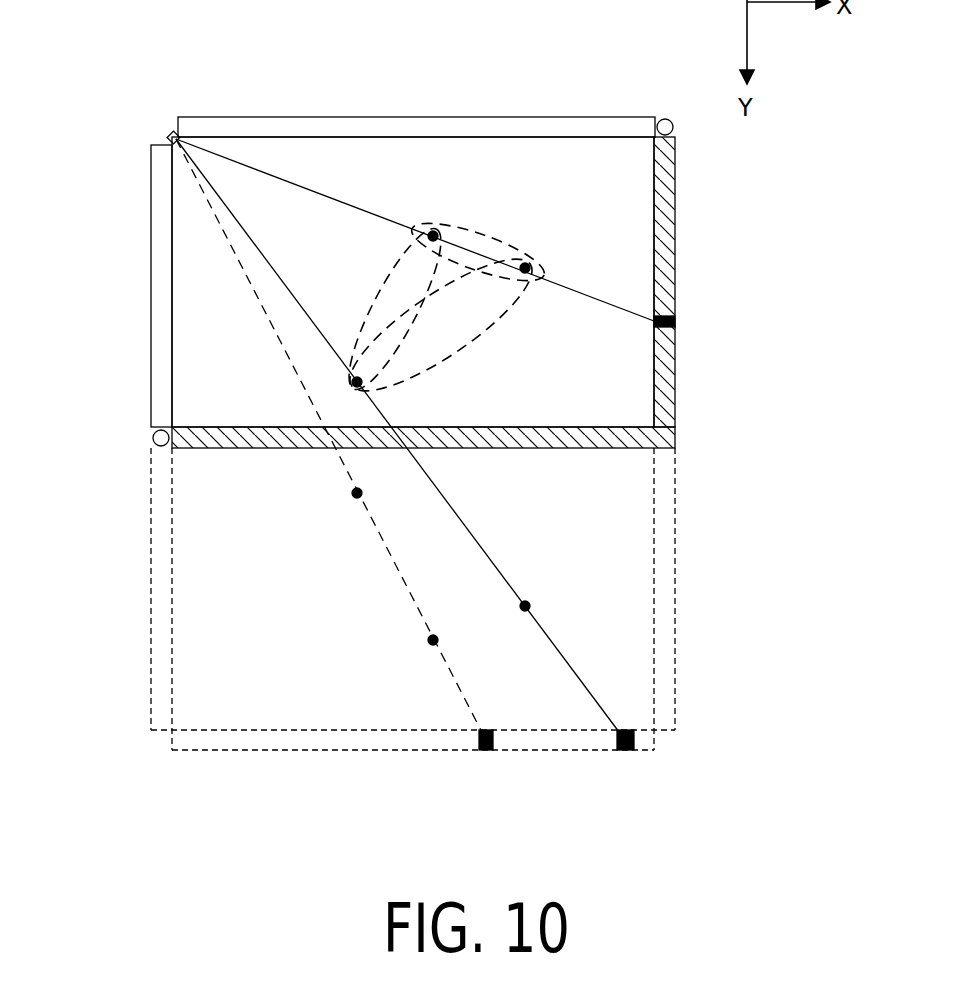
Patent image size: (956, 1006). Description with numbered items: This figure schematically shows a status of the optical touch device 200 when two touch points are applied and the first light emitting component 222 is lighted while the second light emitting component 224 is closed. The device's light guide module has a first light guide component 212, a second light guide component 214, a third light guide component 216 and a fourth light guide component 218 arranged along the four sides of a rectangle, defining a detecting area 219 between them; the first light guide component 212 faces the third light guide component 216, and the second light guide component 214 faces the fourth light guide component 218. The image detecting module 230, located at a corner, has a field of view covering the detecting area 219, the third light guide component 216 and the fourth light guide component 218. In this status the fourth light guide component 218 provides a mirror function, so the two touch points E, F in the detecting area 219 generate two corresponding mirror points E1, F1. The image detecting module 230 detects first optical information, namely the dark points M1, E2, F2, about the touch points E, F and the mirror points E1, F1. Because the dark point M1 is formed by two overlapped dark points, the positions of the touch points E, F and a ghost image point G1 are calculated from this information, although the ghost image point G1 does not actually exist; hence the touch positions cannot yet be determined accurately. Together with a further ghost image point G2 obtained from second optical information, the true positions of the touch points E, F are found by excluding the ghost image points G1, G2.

The optical touch device 200 is at (760, 788).
The first light guide component 212 is at (158, 220).
The second light guide component 214 is at (410, 118).
The third light guide component 216 is at (675, 235).
The fourth light guide component 218 is at (675, 438).
The detecting area 219 is at (210, 313).
The first light emitting component 222 is at (665, 119).
The second light emitting component 224 is at (152, 438).
The image detecting module 230 is at (168, 132).
The dark point M1 is at (675, 322).
The touch point E is at (436, 230).
The touch point F is at (529, 264).
The ghost image point G1 is at (362, 385).
The ghost image point G2 is at (353, 497).
The mirror point E1 is at (437, 636).
The mirror point F1 is at (530, 602).
The dark point E2 is at (486, 752).
The dark point F2 is at (625, 752).